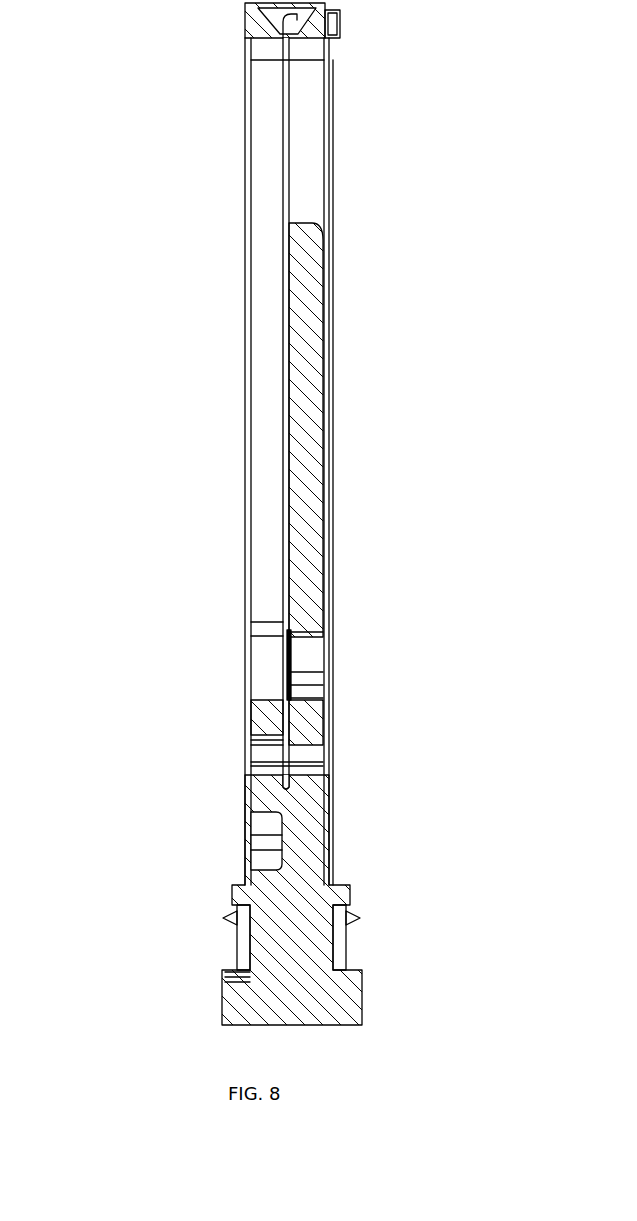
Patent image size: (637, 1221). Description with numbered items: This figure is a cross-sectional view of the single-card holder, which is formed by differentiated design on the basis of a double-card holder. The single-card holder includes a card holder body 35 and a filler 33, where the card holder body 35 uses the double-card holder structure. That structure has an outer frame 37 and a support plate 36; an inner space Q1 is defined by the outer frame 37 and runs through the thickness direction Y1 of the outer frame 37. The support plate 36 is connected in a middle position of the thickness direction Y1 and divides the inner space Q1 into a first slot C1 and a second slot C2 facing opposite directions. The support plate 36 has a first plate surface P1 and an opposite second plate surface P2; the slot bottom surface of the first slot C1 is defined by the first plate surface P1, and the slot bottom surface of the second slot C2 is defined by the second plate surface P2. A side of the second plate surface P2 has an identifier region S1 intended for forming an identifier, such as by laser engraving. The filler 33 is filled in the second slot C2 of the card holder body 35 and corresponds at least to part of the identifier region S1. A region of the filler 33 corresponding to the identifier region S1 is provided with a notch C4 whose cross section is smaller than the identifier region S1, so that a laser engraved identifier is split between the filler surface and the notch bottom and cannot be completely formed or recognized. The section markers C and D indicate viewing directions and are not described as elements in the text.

The card holder body 35 is at (436, 100).
The support plate 36 is at (289, 117).
The outer frame 37 is at (332, 226).
The filler 33 is at (303, 313).
The first slot C1 is at (268, 82).
The second slot C2 is at (310, 188).
The inner space Q1 is at (105, 92).
The notch C4 is at (308, 659).
The identifier region S1 is at (291, 681).
The first plate surface P1 is at (281, 395).
The second plate surface P2 is at (300, 378).
The section line C is at (88, 487).
The section line D is at (435, 477).
The thickness direction Y1 is at (220, 38).